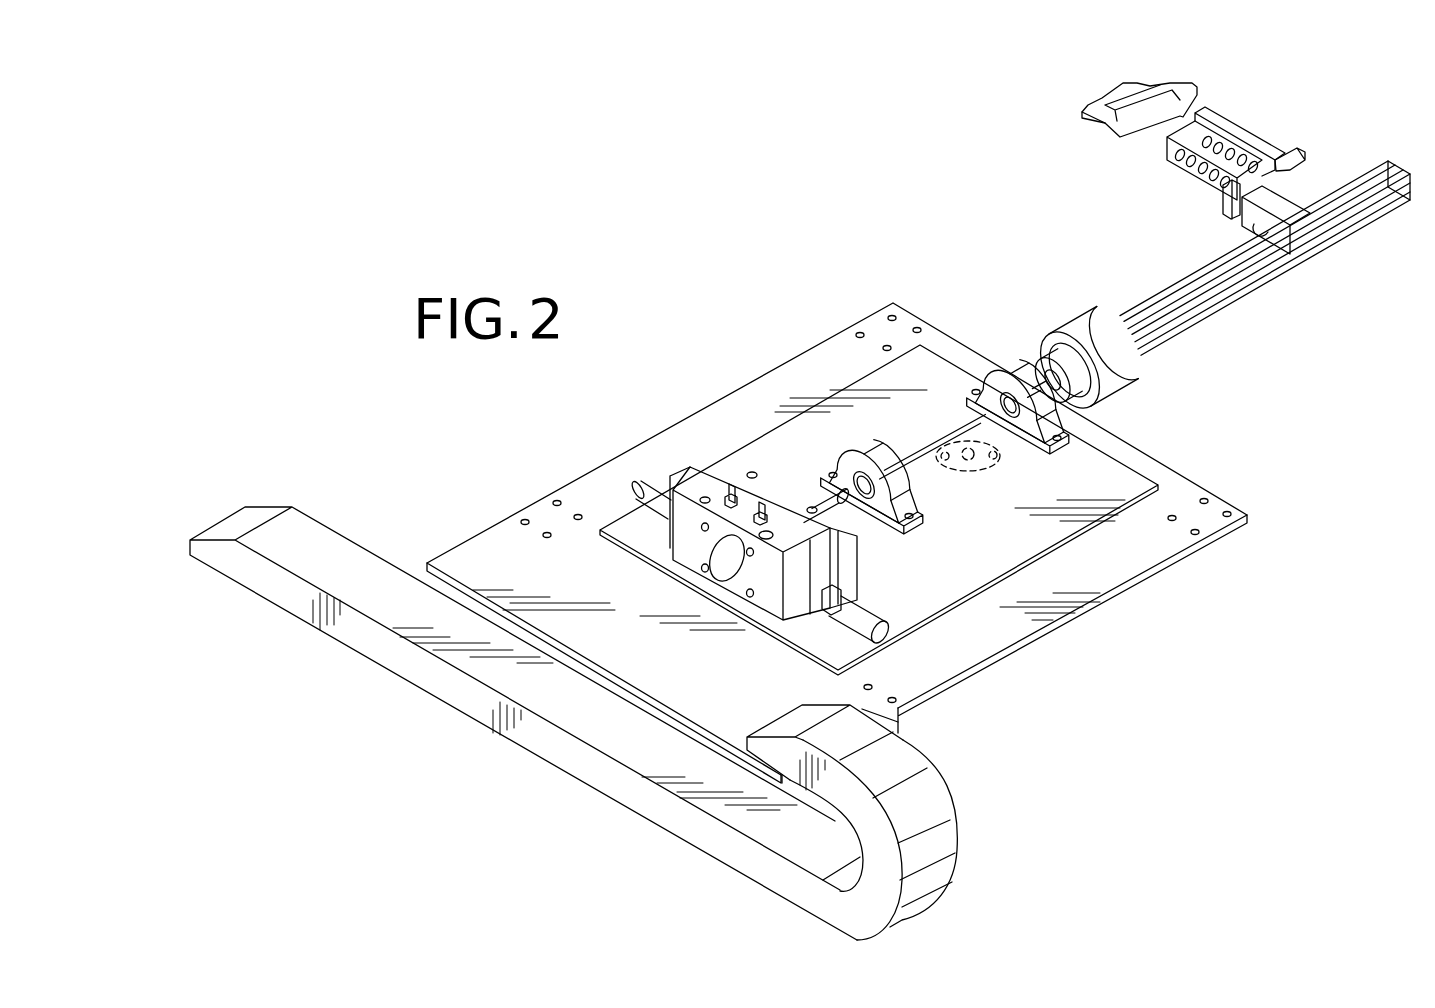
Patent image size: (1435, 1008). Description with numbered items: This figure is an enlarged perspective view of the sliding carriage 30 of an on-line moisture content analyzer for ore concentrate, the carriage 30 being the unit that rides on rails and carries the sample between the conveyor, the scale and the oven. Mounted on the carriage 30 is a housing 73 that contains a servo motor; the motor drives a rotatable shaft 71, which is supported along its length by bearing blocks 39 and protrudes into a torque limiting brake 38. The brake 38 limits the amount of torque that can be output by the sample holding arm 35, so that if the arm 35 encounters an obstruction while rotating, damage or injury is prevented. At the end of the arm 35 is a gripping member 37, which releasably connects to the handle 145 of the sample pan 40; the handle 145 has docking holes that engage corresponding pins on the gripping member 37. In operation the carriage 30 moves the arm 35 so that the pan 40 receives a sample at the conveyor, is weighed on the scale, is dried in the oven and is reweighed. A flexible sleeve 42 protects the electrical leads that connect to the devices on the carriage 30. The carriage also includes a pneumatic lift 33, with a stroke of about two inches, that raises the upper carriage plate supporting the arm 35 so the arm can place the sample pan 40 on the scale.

The sliding carriage 30 is at (1213, 497).
The pneumatic lift 33 is at (1000, 463).
The sample holding arm 35 is at (1262, 287).
The gripping member 37 is at (1223, 130).
The torque limiting brake 38 is at (1070, 308).
The bearing blocks 39 is at (1021, 364).
The sample pan 40 is at (1097, 125).
The flexible sleeve 42 is at (943, 833).
The rotatable shaft 71 is at (925, 459).
The housing 73 is at (740, 462).
The handle 145 is at (1197, 138).